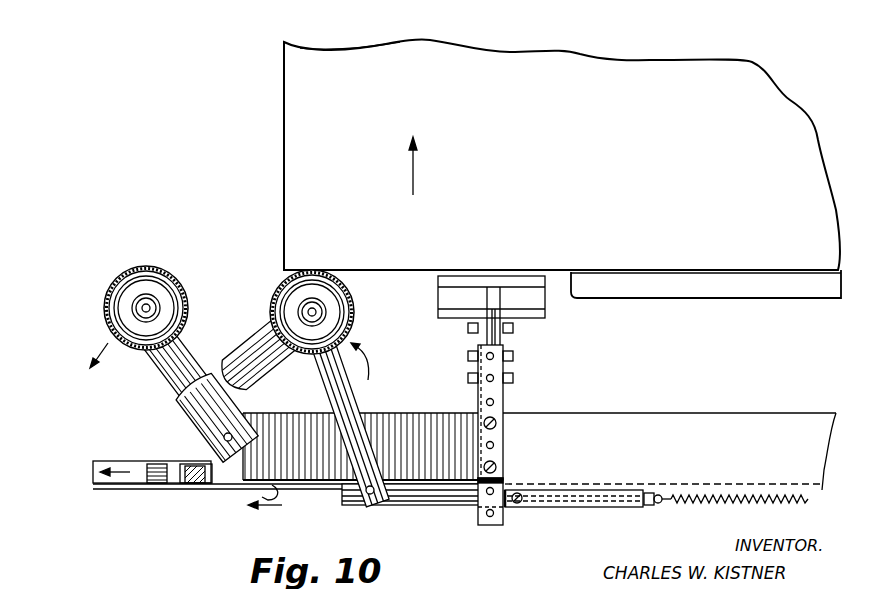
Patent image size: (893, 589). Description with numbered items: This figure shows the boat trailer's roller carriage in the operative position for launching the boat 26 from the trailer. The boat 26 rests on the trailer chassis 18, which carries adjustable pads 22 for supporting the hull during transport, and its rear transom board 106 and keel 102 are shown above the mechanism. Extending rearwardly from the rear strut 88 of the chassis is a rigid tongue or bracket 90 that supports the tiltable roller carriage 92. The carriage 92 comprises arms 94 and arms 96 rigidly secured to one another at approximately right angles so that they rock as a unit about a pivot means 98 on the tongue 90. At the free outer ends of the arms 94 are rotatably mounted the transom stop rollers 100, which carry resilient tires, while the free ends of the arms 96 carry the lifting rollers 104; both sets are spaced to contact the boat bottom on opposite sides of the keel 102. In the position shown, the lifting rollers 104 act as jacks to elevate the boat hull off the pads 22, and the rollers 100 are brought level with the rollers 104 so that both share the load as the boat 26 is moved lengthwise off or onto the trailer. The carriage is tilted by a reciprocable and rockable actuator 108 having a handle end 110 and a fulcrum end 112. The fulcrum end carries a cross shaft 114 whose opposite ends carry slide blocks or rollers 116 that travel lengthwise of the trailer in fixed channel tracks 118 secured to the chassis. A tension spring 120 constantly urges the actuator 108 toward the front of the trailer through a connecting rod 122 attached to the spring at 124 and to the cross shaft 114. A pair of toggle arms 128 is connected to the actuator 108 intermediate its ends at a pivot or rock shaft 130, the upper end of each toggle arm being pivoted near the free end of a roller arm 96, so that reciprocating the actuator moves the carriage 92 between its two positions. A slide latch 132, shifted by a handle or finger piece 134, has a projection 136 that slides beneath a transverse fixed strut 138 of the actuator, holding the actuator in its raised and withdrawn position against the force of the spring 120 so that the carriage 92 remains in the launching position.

The chassis 18 is at (600, 465).
The adjustable pads 22 is at (540, 300).
The boat 26 is at (630, 72).
The rear strut 88 is at (470, 410).
The tongue or bracket 90 is at (320, 465).
The roller carriage 92 is at (188, 406).
The arms 94 is at (163, 381).
The arms 96 is at (258, 336).
The pivot means 98 is at (222, 437).
The rollers 100 is at (142, 266).
The keel 102 is at (720, 300).
The rollers 104 is at (354, 313).
The transom board 106 is at (284, 160).
The actuator 108 is at (321, 497).
The handle end 110 is at (120, 483).
The fulcrum end 112 is at (476, 504).
The cross shaft 114 is at (512, 511).
The slide blocks or rollers 116 is at (521, 494).
The tracks 118 is at (612, 499).
The tension spring 120 is at (782, 503).
The connecting rod 122 is at (650, 505).
The spring attachment 124 is at (662, 503).
The toggle arms 128 is at (348, 400).
The pivot or rock shaft 130 is at (372, 503).
The slide latch 132 is at (222, 492).
The handle or finger piece 134 is at (280, 506).
The projection 136 is at (199, 490).
The transverse fixed strut 138 is at (197, 465).